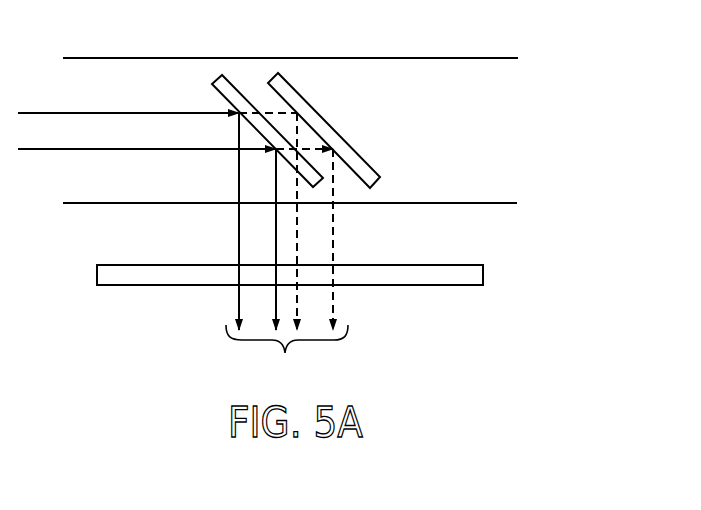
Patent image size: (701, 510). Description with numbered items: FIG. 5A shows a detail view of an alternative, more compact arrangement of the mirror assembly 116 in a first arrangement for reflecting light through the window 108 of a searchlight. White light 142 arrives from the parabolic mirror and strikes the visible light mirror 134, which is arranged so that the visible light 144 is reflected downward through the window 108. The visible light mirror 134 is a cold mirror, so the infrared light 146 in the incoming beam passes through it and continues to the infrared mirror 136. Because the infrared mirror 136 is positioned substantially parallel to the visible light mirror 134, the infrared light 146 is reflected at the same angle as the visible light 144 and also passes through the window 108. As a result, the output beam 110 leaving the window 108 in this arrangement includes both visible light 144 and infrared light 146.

The mirror assembly 116 is at (538, 57).
The white light 142 is at (38, 111).
The visible light mirror 134 is at (218, 91).
The infrared mirror 136 is at (297, 92).
The visible light 144 is at (275, 240).
The infrared light 146 is at (298, 240).
The window 108 is at (423, 277).
The output beam 110 is at (287, 356).